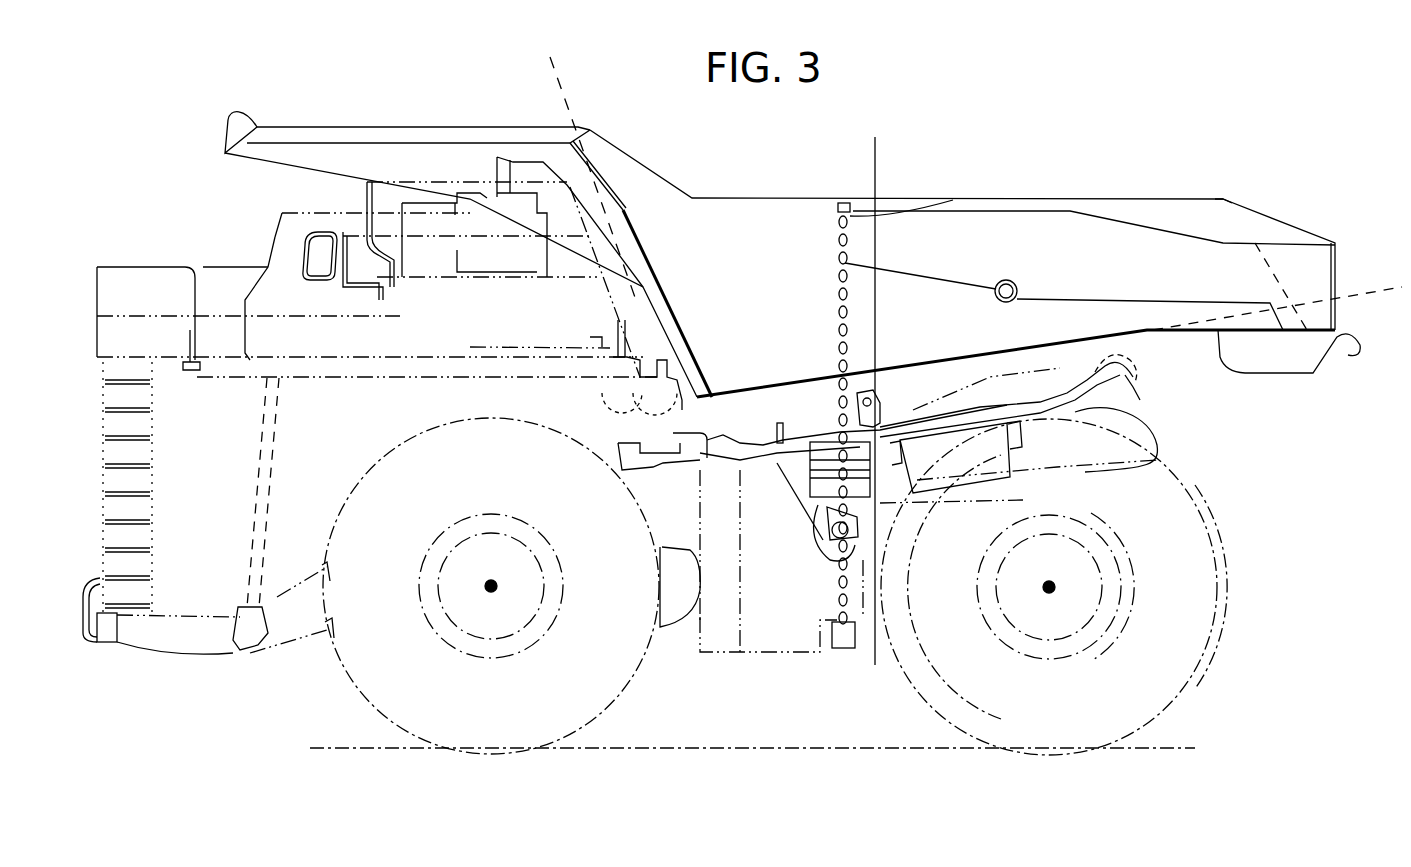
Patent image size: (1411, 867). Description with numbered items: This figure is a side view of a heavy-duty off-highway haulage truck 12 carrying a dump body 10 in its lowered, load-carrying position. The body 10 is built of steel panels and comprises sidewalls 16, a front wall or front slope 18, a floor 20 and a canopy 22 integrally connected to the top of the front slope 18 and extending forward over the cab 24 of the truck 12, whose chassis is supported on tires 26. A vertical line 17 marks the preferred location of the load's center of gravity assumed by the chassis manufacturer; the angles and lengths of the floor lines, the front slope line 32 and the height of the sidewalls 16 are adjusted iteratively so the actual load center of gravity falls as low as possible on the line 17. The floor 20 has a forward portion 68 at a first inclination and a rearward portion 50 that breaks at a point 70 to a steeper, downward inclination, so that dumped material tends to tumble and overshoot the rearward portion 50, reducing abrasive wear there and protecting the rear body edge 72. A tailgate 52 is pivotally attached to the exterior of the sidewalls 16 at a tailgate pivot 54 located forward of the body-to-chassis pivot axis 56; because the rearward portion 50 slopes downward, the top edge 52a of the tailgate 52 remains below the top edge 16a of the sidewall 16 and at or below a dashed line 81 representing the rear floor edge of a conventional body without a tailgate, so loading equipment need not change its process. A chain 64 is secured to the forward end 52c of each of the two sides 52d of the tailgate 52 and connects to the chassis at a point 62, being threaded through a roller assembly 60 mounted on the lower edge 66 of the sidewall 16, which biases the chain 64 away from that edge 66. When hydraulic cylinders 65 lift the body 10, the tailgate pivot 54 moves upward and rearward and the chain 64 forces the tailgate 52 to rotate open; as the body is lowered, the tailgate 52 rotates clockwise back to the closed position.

The dump body 10 is at (686, 192).
The off-highway truck 12 is at (156, 240).
The sidewalls 16 is at (738, 320).
The top edge of the sidewall 16a is at (1223, 198).
The vertical line 17 is at (876, 178).
The front wall or front slope 18 is at (668, 293).
The floor 20 is at (1015, 285).
The canopy 22 is at (317, 133).
The cab 24 is at (325, 243).
The tires 26 is at (387, 673).
The front slope line 32 is at (570, 97).
The rearward portion of the floor 50 is at (1295, 389).
The tailgate 52 is at (1126, 238).
The top edge of the tailgate 52a is at (1342, 240).
The forward end of the tailgate side 52c is at (940, 200).
The sides of the tailgate 52d is at (1160, 277).
The tailgate pivot 54 is at (950, 362).
The body-to-chassis pivot axis 56 is at (1130, 382).
The roller assembly 60 is at (823, 503).
The chassis attachment point 62 is at (847, 647).
The chain 64 is at (838, 297).
The hydraulic cylinders 65 is at (868, 427).
The lower edge of the sidewall 66 is at (1187, 380).
The forward portion of the floor 68 is at (893, 363).
The breakpoint 70 is at (1173, 330).
The rear body edge 72 is at (1340, 330).
The dashed line 81 is at (1392, 295).